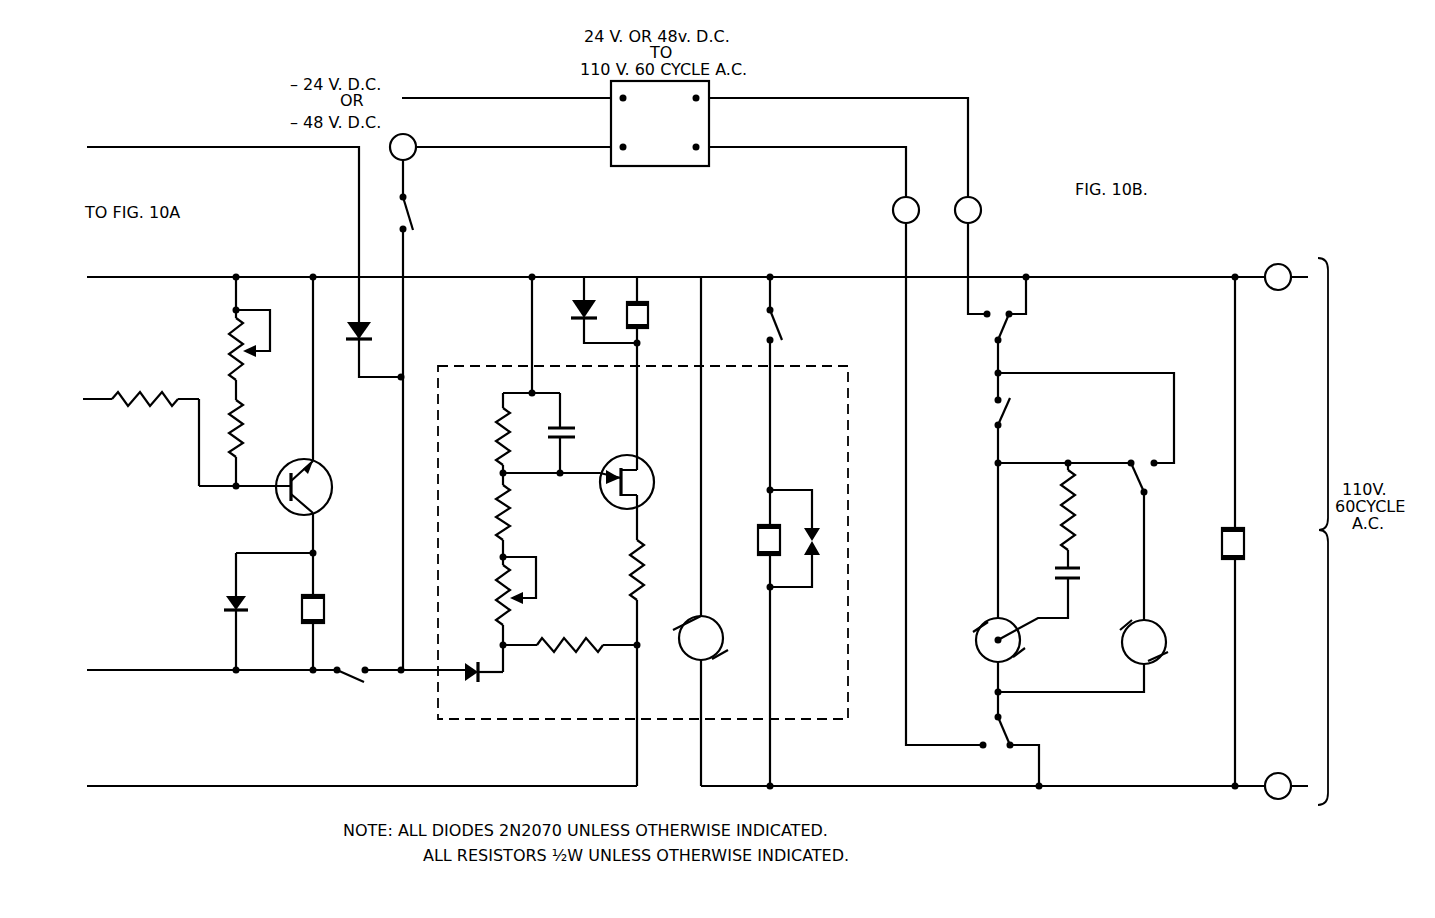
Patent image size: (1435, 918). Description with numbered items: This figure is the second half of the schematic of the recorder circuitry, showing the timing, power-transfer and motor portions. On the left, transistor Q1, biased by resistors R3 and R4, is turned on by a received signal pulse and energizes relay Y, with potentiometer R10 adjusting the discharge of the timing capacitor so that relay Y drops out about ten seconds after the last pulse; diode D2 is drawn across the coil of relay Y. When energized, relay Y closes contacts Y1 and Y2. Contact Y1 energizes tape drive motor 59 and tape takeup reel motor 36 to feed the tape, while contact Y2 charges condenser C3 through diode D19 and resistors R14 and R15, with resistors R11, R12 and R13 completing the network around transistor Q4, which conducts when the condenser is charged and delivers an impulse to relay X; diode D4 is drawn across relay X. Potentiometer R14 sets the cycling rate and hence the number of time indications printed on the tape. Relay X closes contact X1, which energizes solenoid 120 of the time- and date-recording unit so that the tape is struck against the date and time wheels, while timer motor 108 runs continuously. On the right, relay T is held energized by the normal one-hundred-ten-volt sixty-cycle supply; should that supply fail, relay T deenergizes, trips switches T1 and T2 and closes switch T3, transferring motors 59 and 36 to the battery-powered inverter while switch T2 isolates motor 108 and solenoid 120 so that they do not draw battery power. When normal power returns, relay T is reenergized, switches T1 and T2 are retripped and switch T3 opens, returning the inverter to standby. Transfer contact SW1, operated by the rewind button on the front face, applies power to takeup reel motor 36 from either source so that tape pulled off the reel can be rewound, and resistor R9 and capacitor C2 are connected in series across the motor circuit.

The switch T3 is at (410, 213).
The potentiometer R10 is at (208, 348).
The resistor R4 is at (244, 430).
The resistor R3 is at (145, 421).
The transistor Q1 is at (325, 487).
The diode D2 is at (222, 606).
The relay Y is at (324, 607).
The contact Y2 is at (348, 676).
The diode D19 is at (476, 683).
The resistor R11 is at (495, 426).
The condenser C3 is at (593, 430).
The resistor R15 is at (479, 512).
The transistor Q4 is at (608, 505).
The potentiometer R14 is at (481, 595).
The resistor R12 is at (629, 571).
The resistor R13 is at (570, 666).
The diode D4 is at (570, 311).
The relay X is at (648, 314).
The contact X1 is at (778, 325).
The solenoid 120 is at (758, 543).
The timer motor 108 is at (715, 634).
The switch T1 is at (1003, 330).
The contact Y1 is at (1002, 412).
The transfer contact SW1 is at (1142, 480).
The resistor R9 is at (1075, 515).
The capacitor C2 is at (1083, 574).
The tape drive motor 59 is at (976, 650).
The tape takeup reel motor 36 is at (1122, 648).
The switch T2 is at (1008, 730).
The relay T is at (1244, 545).